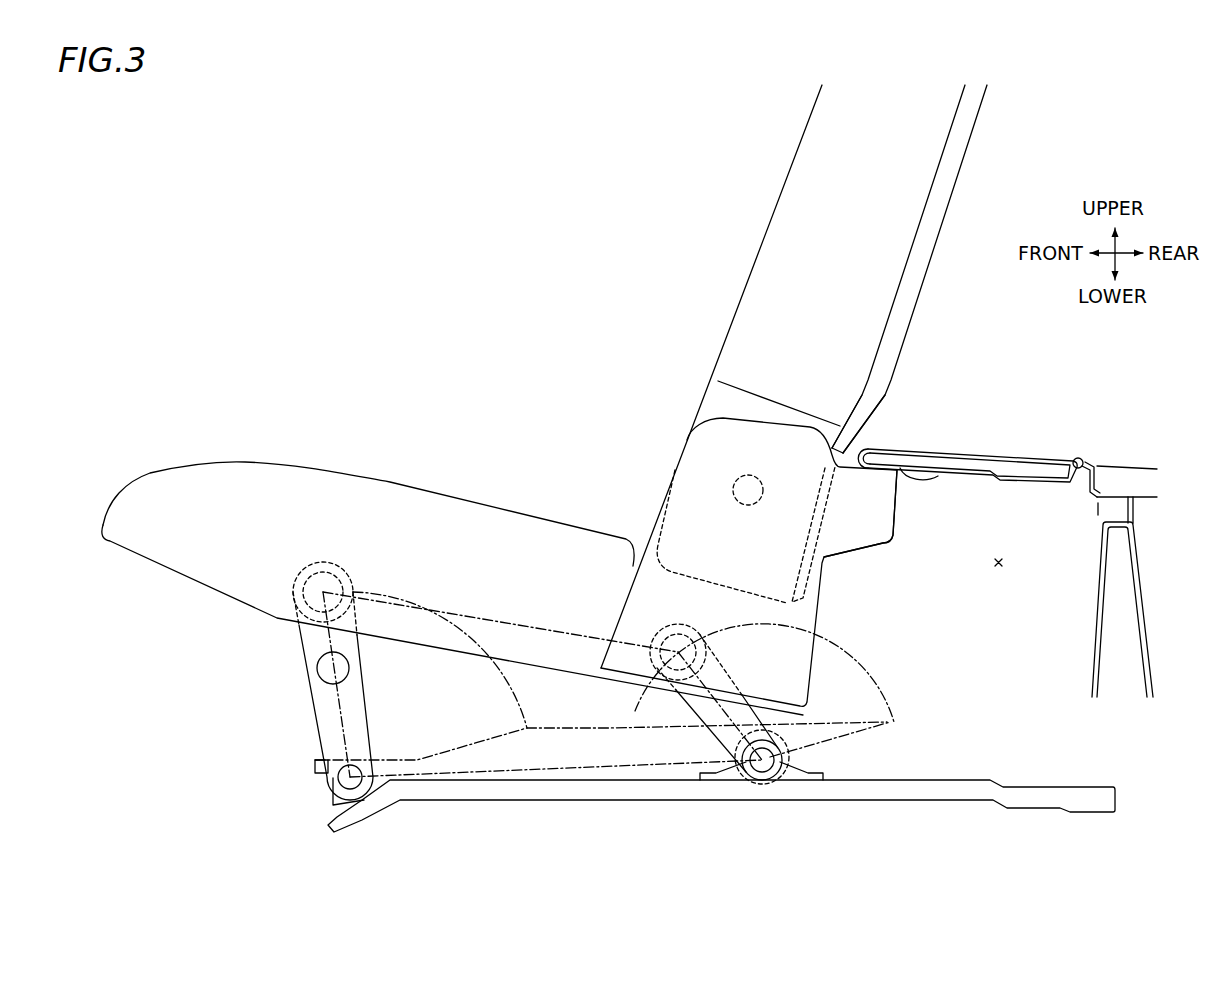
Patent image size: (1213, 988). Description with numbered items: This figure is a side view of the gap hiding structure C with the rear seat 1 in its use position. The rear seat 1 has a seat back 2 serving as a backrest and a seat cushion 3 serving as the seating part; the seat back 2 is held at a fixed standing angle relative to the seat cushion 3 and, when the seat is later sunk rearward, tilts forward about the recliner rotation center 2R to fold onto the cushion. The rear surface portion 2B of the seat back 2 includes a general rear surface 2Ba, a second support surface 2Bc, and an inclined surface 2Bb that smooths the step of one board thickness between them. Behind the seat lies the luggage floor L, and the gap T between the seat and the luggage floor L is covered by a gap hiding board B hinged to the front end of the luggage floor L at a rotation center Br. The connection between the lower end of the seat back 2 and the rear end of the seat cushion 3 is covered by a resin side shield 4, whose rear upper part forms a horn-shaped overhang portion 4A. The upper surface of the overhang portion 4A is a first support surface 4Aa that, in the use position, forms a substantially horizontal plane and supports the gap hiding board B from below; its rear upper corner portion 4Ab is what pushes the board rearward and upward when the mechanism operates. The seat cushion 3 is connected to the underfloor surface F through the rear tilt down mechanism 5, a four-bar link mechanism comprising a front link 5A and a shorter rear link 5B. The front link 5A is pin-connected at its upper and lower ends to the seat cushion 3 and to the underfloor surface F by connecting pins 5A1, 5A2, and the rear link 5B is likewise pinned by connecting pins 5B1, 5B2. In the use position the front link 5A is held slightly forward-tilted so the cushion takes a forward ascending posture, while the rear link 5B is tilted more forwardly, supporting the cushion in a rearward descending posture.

The rear seat 1 is at (375, 250).
The seat back 2 is at (752, 258).
The rear surface portion 2B is at (955, 155).
The general rear surface 2Ba is at (947, 217).
The inclined surface 2Bb is at (882, 412).
The second support surface 2Bc is at (823, 522).
The rotation center 2R is at (748, 490).
The seat cushion 3 is at (152, 470).
The side shield 4 is at (805, 601).
The overhang portion 4A is at (878, 497).
The first support surface 4Aa is at (882, 457).
The rear upper corner portion 4Ab is at (930, 462).
The rear tilt down mechanism 5 is at (232, 728).
The front link 5A is at (327, 698).
The connecting pin 5A1 is at (297, 598).
The connecting pin 5A2 is at (337, 778).
The rear link 5B is at (697, 707).
The connecting pin 5B1 is at (665, 673).
The connecting pin 5B2 is at (781, 760).
The gap hiding board B is at (1010, 453).
The rotation center Br is at (1079, 458).
The luggage floor L is at (1133, 466).
The gap T is at (1000, 566).
The gap hiding structure C is at (1067, 365).
The underfloor surface F is at (921, 778).